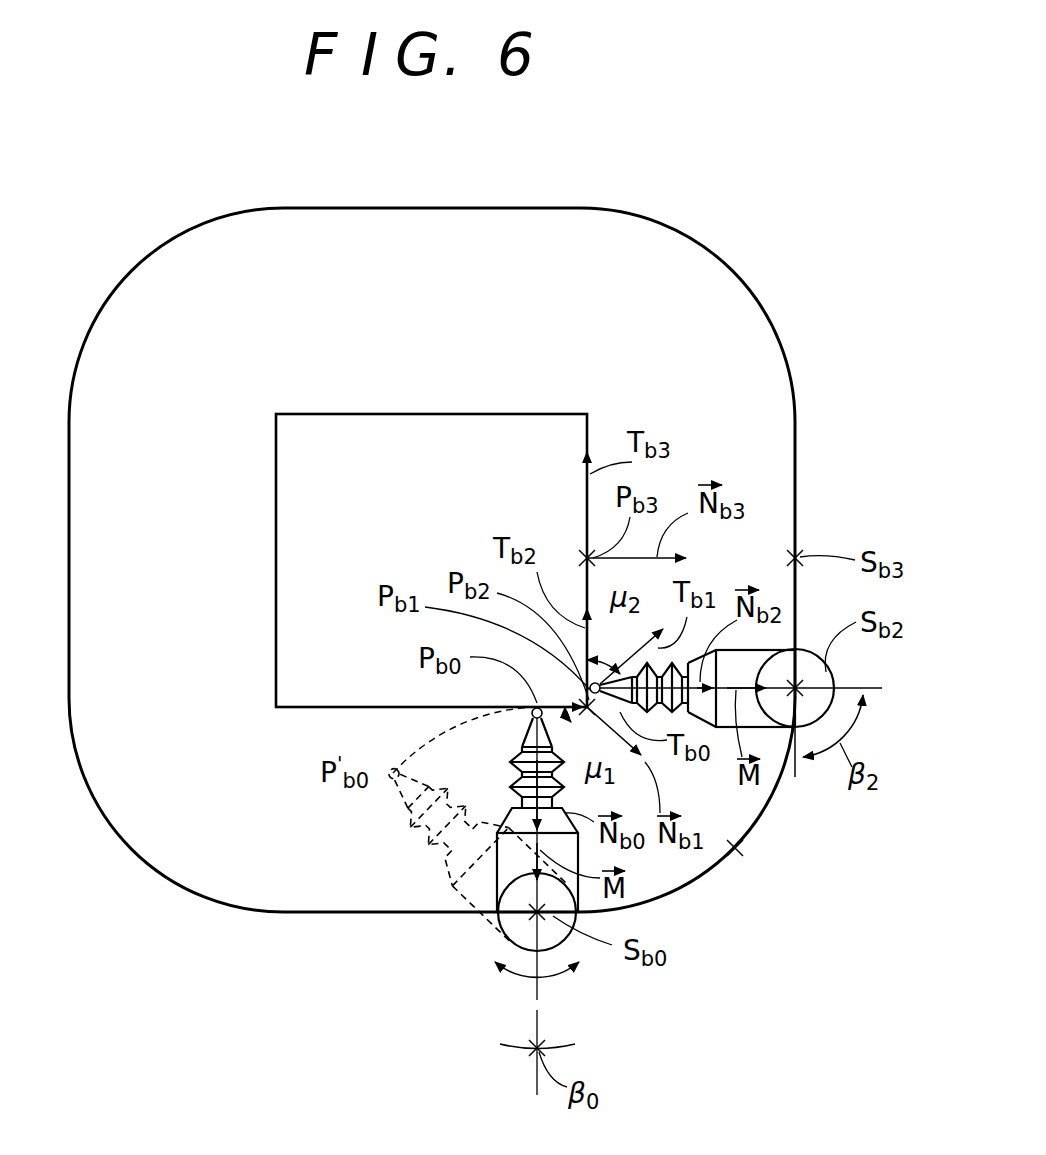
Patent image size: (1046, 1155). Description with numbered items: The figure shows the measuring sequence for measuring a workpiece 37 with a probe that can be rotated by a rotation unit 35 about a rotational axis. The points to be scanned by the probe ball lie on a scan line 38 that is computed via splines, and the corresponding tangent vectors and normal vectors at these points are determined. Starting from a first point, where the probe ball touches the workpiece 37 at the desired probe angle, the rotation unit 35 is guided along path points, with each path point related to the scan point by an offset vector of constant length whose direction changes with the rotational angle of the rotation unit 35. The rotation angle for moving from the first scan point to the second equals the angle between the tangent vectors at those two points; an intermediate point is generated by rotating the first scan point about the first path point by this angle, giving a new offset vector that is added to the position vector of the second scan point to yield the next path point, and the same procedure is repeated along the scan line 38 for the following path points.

The rotation unit 35 is at (518, 923).
The workpiece 37 is at (303, 640).
The scan line 38 is at (276, 534).